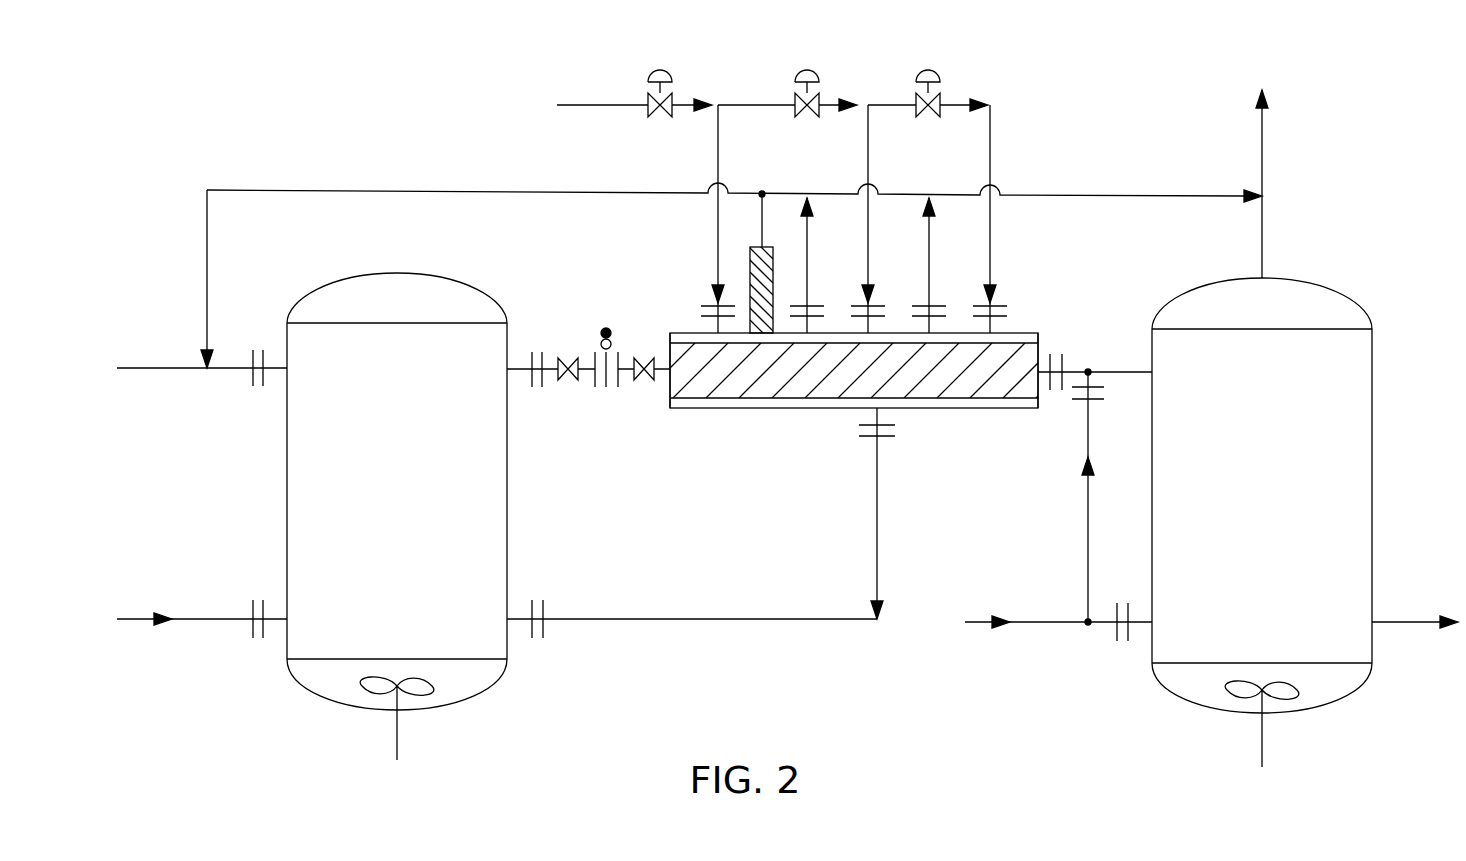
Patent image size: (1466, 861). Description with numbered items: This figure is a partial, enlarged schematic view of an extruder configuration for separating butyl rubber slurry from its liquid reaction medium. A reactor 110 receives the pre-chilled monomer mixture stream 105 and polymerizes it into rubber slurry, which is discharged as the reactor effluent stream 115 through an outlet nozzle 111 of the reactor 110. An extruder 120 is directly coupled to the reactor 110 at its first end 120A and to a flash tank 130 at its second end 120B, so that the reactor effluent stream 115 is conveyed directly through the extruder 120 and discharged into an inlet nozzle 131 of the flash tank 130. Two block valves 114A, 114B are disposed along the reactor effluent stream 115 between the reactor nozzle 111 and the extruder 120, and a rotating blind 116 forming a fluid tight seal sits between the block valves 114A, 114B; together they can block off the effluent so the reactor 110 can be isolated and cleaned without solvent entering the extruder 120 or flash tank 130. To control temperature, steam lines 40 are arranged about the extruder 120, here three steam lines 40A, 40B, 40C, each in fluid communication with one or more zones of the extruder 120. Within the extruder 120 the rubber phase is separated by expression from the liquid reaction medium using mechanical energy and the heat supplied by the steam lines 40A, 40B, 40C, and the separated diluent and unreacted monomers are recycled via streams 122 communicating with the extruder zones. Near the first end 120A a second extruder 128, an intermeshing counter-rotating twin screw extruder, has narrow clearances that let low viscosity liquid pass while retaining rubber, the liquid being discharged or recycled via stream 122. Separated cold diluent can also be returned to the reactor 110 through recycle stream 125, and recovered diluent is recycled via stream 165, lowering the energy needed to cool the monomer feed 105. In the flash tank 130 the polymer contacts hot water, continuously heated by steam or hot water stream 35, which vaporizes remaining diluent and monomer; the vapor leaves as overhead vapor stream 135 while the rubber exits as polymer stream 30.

The polymer stream 30 is at (1410, 620).
The stream 35 is at (1038, 620).
The steam lines 40 is at (612, 104).
The steam line 40A is at (718, 153).
The steam line 40B is at (868, 153).
The steam line 40C is at (991, 145).
The mixture stream 105 is at (152, 617).
The reactor 110 is at (412, 504).
The outlet nozzle 111 is at (530, 348).
The block valve 114A is at (571, 385).
The block valve 114B is at (647, 385).
The reactor effluent stream 115 is at (573, 303).
The rotating blind 116 is at (606, 328).
The extruder 120 is at (806, 410).
The first end 120A is at (668, 348).
The second end 120B is at (1038, 398).
The streams 122 is at (400, 190).
The recycle stream 125 is at (652, 617).
The second extruder 128 is at (750, 252).
The flash tank 130 is at (1277, 502).
The inlet nozzle 131 is at (1117, 370).
The vapor stream 135 is at (1262, 128).
The stream 165 is at (160, 367).